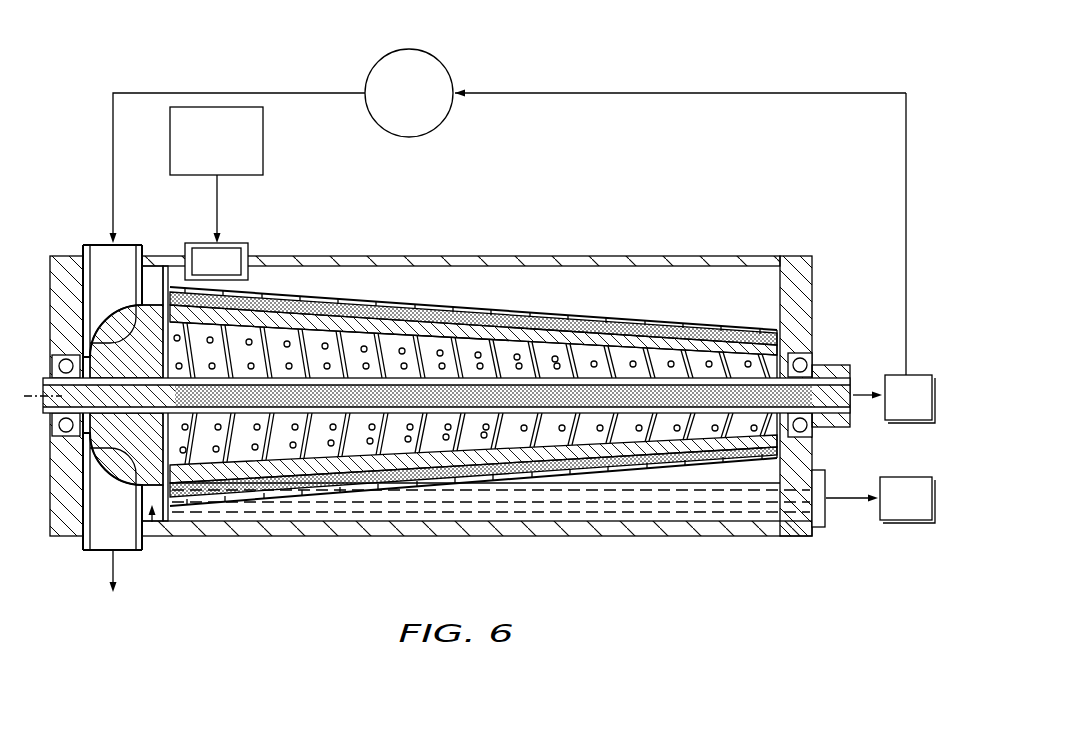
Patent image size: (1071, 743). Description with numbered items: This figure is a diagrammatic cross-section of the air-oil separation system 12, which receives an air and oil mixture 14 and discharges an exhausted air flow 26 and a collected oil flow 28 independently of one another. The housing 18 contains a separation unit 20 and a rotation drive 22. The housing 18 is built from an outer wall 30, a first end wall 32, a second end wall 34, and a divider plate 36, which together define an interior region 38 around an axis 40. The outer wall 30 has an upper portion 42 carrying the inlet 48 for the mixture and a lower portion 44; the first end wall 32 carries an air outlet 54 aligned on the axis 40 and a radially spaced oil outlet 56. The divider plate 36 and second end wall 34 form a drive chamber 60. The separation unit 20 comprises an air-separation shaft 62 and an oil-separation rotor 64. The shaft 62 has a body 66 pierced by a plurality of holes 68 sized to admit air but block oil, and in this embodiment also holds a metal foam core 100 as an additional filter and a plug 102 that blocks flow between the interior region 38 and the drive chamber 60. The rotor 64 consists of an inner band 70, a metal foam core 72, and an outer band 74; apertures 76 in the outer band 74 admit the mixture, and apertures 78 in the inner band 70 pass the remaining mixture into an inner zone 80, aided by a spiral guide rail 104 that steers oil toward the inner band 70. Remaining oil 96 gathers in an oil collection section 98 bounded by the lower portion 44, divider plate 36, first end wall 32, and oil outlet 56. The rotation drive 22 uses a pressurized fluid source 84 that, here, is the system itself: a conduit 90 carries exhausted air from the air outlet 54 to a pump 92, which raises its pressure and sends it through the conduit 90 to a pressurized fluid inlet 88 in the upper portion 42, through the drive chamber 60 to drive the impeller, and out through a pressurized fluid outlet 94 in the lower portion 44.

The air-oil separation system 12 is at (409, 233).
The air and oil mixture 14 is at (185, 108).
The housing 18 is at (517, 238).
The separation unit 20 is at (478, 257).
The rotation drive 22 is at (157, 532).
The exhausted air flow 26 is at (910, 375).
The collected oil flow 28 is at (903, 477).
The outer wall 30 is at (692, 238).
The first end wall 32 is at (815, 292).
The second end wall 34 is at (50, 303).
The divider plate 36 is at (127, 275).
The interior region 38 is at (593, 300).
The axis 40 is at (36, 392).
The upper portion 42 is at (307, 287).
The lower portion 44 is at (583, 535).
The inlet 48 is at (222, 243).
The air outlet 54 is at (852, 379).
The oil outlet 56 is at (825, 488).
The drive chamber 60 is at (156, 270).
The air-separation shaft 62 is at (376, 295).
The oil-separation rotor 64 is at (427, 287).
The body 66 is at (696, 355).
The plurality of holes 68 is at (740, 340).
The inner band 70 is at (615, 355).
The metal foam core 72 is at (547, 323).
The outer band 74 is at (357, 358).
The plurality of apertures 76 is at (727, 477).
The plurality of apertures 78 is at (657, 458).
The inner zone 80 is at (660, 372).
The pressurized fluid source 84 is at (813, 70).
The pressurized fluid inlet 88 is at (100, 245).
The conduit 90 is at (863, 93).
The pump 92 is at (403, 49).
The pressurized fluid outlet 94 is at (100, 551).
The remaining oil 96 is at (462, 507).
The oil collection section 98 is at (757, 470).
The metal foam core 100 is at (503, 377).
The plug 102 is at (50, 405).
The spiral guide rail 104 is at (193, 343).